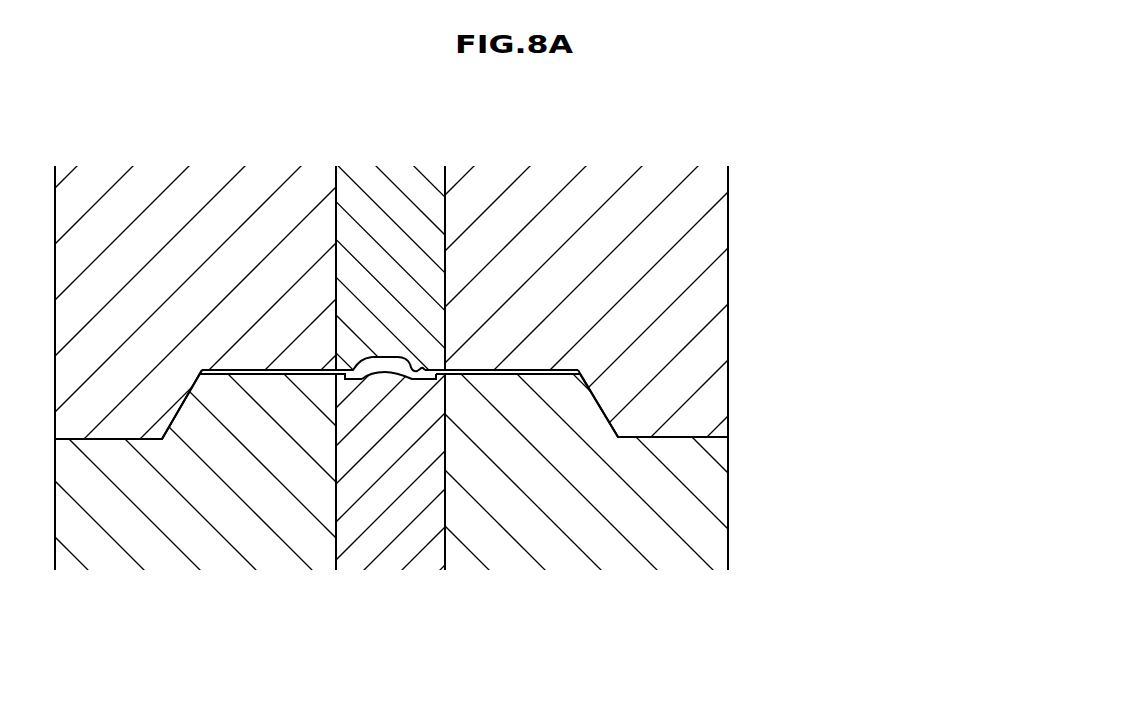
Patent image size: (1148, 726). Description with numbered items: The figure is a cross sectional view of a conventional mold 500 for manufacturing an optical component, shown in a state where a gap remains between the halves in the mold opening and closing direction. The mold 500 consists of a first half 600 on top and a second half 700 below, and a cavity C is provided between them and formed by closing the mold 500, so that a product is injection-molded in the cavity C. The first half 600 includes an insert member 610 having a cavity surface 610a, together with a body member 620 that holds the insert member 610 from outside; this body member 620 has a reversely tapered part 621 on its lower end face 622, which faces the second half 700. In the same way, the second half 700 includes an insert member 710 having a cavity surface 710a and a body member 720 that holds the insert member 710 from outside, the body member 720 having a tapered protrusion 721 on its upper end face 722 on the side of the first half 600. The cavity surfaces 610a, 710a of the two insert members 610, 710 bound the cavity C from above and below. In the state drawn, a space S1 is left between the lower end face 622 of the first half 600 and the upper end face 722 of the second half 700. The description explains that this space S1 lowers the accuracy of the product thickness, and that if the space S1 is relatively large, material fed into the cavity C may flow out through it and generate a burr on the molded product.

The mold 500 is at (755, 207).
The first half 600 is at (522, 357).
The second half 700 is at (478, 382).
The body member 620 is at (147, 233).
The insert member 610 is at (376, 190).
The cavity surface 610a is at (421, 362).
The lower end face 622 is at (508, 376).
The reversely tapered part 621 is at (603, 417).
The tapered protrusion 721 is at (597, 395).
The body member 720 is at (152, 485).
The insert member 710 is at (417, 543).
The cavity surface 710a is at (386, 373).
The upper end face 722 is at (531, 373).
The cavity C is at (363, 377).
The space S1 is at (257, 407).